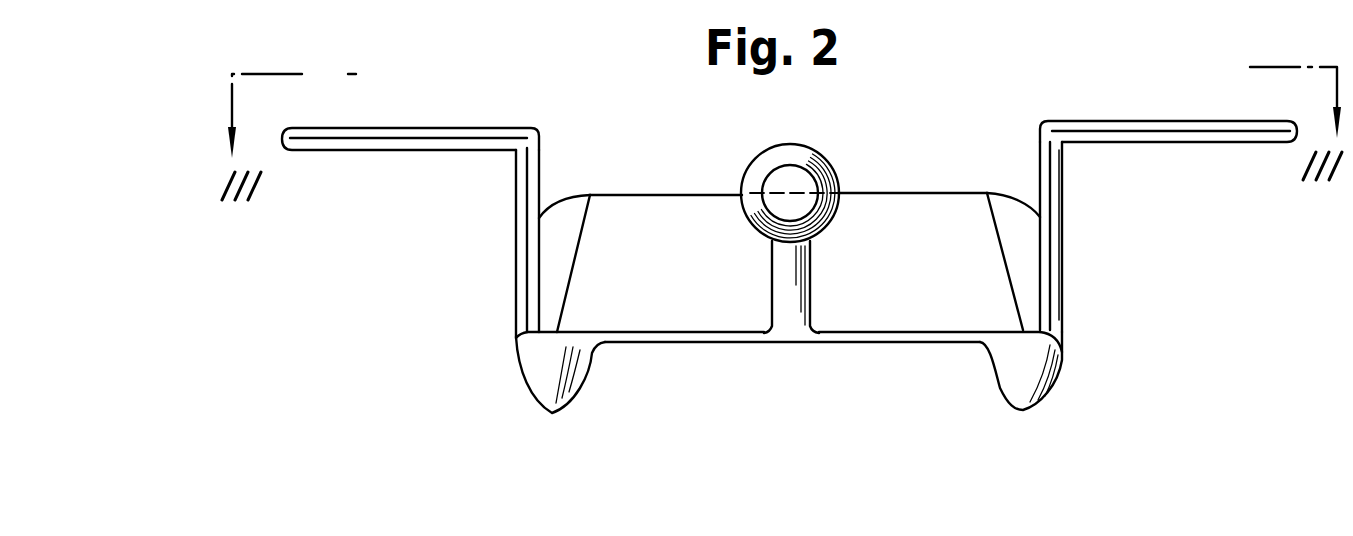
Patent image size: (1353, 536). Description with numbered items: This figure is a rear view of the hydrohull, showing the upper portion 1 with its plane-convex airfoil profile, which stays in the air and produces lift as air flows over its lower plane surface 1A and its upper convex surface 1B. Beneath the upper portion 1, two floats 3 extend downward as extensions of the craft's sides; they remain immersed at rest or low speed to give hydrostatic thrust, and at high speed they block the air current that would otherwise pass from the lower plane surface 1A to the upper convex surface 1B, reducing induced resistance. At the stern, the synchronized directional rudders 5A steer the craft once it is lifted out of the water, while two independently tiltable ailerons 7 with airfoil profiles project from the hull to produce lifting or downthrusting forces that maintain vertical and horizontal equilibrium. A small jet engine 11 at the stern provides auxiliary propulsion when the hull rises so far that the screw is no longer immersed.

The upper portion 1 is at (778, 274).
The lower plane surface 1A is at (778, 375).
The upper convex surface 1B is at (660, 206).
The floats 3 is at (528, 388).
The directional rudders 5A is at (1040, 176).
The ailerons 7 is at (383, 129).
The jet engine 11 is at (843, 176).